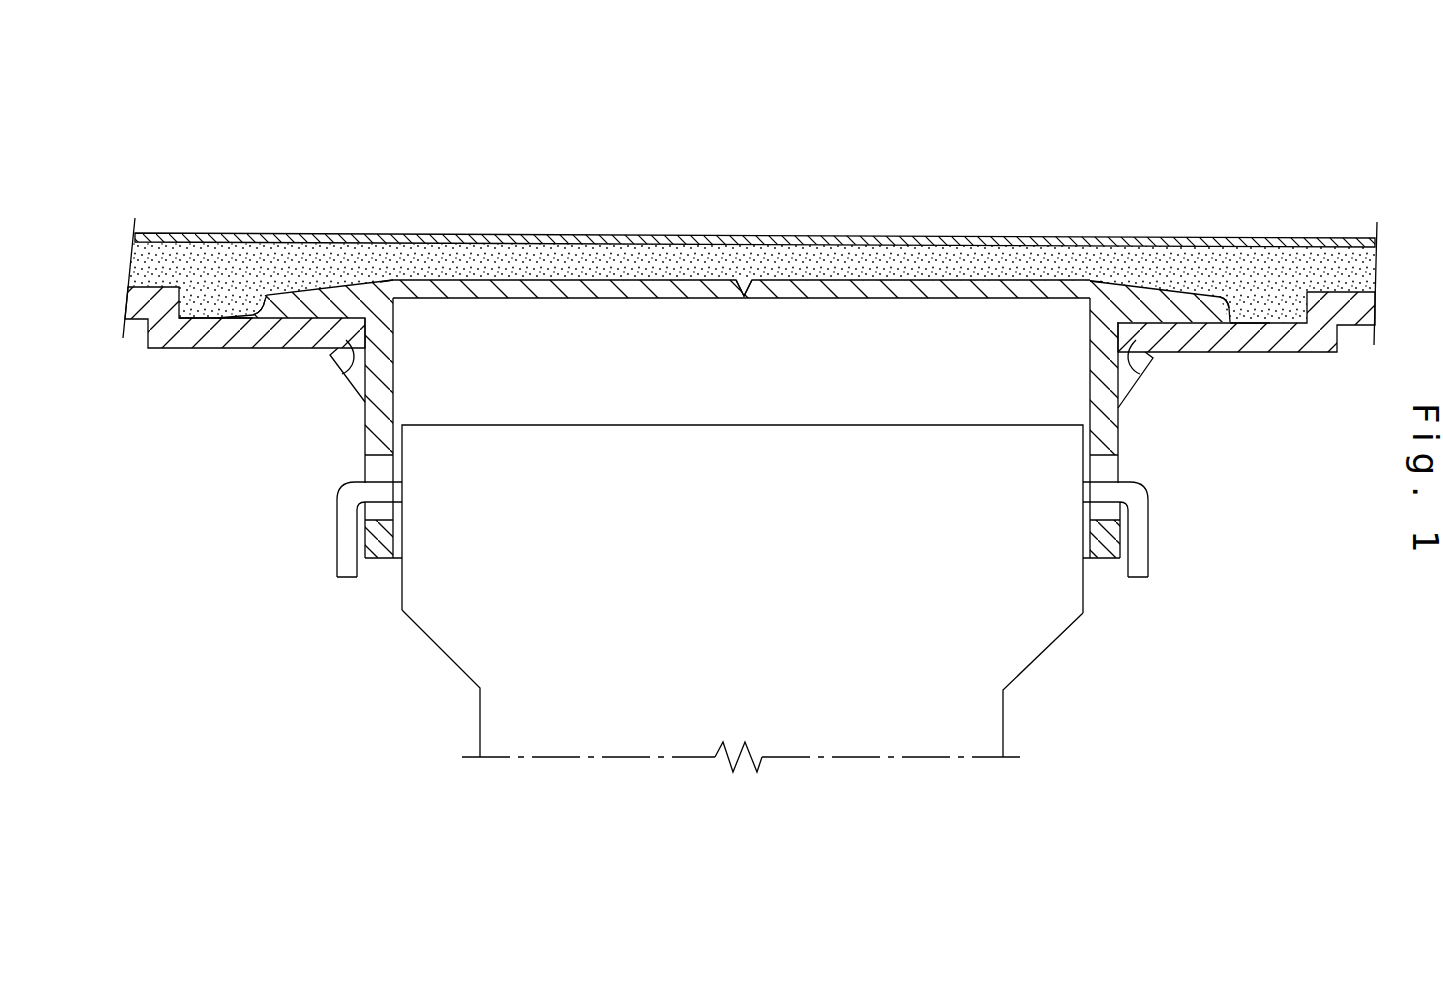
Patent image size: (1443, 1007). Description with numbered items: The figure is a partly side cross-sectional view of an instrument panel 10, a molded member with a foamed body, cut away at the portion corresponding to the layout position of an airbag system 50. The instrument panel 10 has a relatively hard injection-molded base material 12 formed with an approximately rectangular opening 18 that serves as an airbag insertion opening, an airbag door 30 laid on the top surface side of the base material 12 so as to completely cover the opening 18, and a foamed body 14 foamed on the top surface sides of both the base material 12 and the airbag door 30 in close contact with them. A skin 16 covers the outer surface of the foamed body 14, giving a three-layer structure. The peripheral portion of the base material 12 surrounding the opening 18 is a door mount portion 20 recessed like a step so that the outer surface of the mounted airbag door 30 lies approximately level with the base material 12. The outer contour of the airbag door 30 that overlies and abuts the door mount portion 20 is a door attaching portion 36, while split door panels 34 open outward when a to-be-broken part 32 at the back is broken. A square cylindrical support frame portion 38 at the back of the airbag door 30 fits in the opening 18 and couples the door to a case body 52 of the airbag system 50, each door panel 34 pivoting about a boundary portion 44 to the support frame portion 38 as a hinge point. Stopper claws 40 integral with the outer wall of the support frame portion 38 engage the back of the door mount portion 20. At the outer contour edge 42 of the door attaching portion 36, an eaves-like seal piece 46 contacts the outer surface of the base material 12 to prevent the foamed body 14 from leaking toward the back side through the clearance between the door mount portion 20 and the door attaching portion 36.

The instrument panel 10 is at (1266, 213).
The base material 12 is at (1353, 338).
The foamed body 14 is at (1275, 283).
The skin 16 is at (1200, 243).
The opening 18 is at (363, 345).
The door mount portion 20 is at (198, 305).
The airbag door 30 is at (660, 275).
The to-be-broken part 32 is at (737, 285).
The door panel 34 is at (560, 290).
The door attaching portion 36 is at (292, 310).
The support frame portion 38 is at (380, 547).
The stopper claw 40 is at (345, 356).
The outer contour edge 42 is at (253, 300).
The boundary portion 44 is at (385, 293).
The seal piece 46 is at (243, 320).
The airbag system 50 is at (1052, 648).
The case body 52 is at (1040, 585).